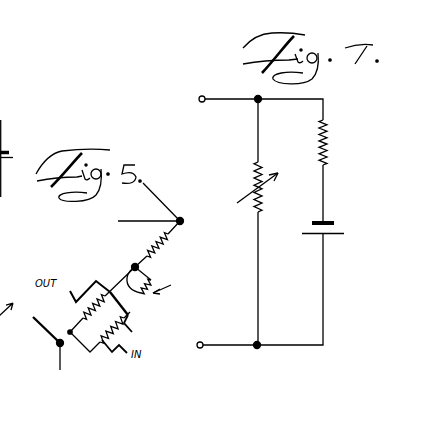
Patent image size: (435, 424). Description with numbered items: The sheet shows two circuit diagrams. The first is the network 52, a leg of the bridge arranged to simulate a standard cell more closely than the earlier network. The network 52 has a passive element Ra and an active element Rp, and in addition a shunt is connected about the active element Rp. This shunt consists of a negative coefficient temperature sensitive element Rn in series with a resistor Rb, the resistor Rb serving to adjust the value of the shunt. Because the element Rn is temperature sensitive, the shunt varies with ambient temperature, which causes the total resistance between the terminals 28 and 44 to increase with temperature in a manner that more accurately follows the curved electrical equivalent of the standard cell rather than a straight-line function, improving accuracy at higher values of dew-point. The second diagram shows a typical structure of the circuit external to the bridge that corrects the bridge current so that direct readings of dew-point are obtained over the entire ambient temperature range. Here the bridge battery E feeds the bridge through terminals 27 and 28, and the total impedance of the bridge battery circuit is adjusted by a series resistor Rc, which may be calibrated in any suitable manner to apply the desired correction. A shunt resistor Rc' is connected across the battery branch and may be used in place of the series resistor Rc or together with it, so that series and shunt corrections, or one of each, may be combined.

In FIG. 7, the input terminal 27 is at (208, 88).
In FIG. 7, the terminal 28 is at (200, 348).
In FIG. 5, the terminal 28 is at (57, 346).
In FIG. 5, the terminal 44 is at (183, 219).
In FIG. 5, the network 52 is at (172, 280).
In FIG. 7, the series resistor Rc is at (341, 142).
In FIG. 7, the shunt resistor Rc' is at (265, 189).
In FIG. 7, the battery E is at (344, 231).
In FIG. 5, the battery E is at (14, 157).
In FIG. 5, the passive element Ra is at (147, 249).
In FIG. 5, the resistor Rb is at (126, 274).
In FIG. 5, the active element Rp is at (68, 304).
In FIG. 5, the negative coefficient temperature sensitive element Rn is at (129, 328).